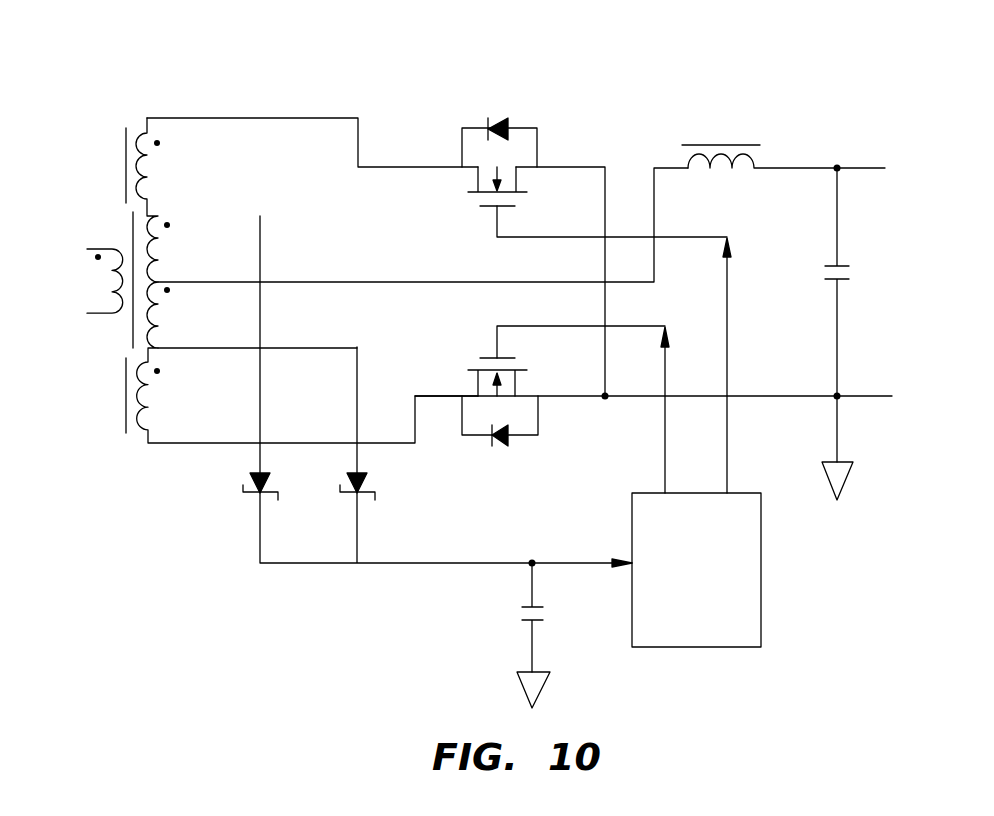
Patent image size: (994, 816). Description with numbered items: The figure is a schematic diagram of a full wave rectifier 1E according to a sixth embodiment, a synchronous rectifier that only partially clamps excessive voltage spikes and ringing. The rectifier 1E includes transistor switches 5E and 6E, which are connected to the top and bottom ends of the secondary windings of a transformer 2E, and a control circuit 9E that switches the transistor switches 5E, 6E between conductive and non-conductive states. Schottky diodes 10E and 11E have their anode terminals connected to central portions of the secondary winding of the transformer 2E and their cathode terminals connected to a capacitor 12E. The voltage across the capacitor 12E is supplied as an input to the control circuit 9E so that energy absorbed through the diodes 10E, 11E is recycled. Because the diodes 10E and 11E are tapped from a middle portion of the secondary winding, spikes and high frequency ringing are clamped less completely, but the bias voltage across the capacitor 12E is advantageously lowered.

The full wave rectifier 1E is at (316, 91).
The transformer 2E is at (77, 288).
The transistor switch 5E is at (495, 107).
The transistor switch 6E is at (468, 360).
The control circuit 9E is at (753, 605).
The Schottky diode 10E is at (232, 485).
The Schottky diode 11E is at (390, 485).
The capacitor 12E is at (512, 623).